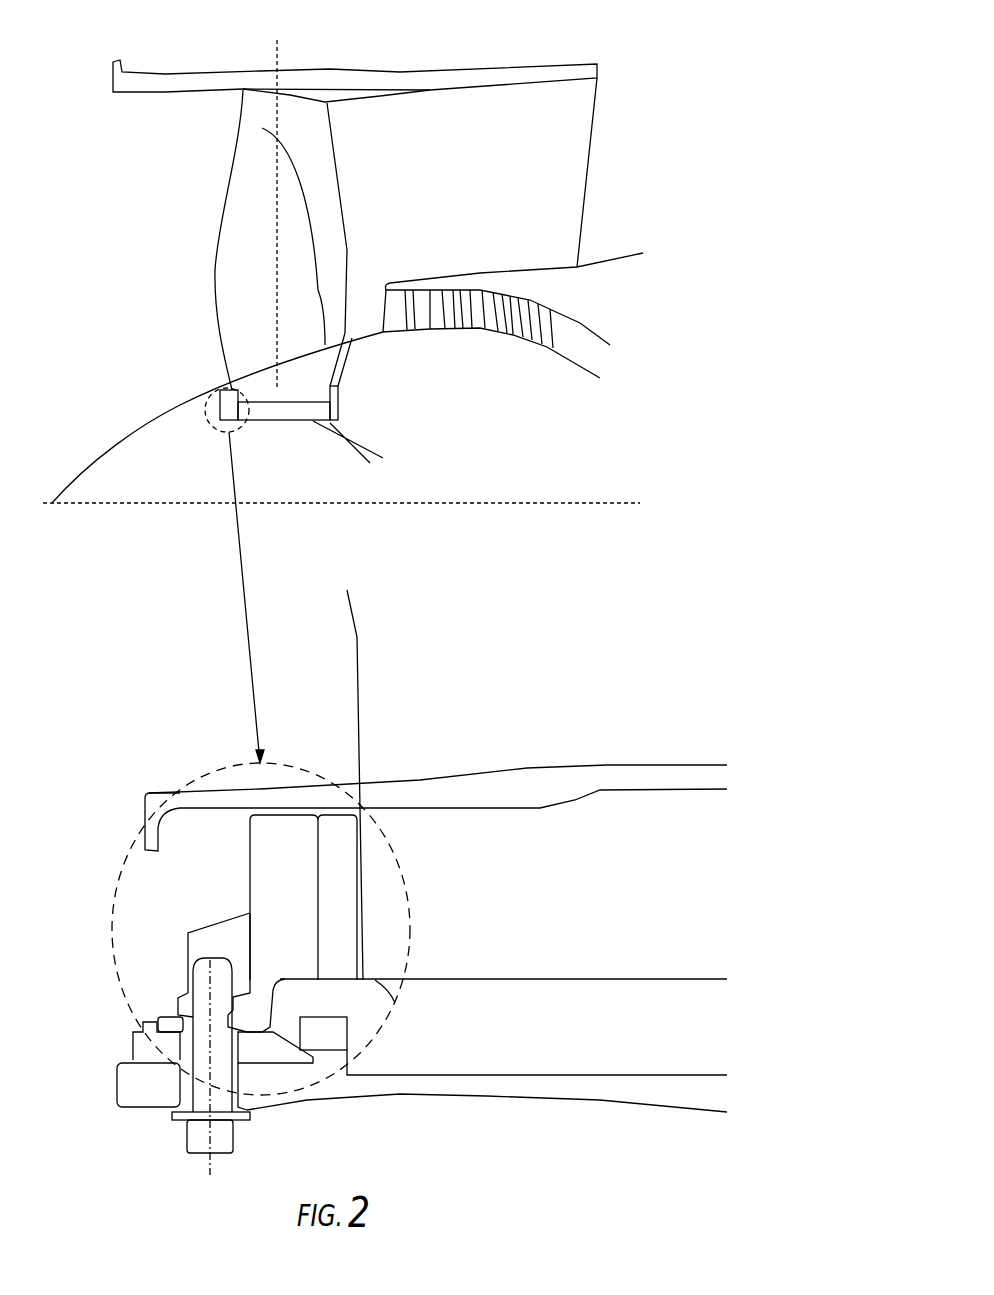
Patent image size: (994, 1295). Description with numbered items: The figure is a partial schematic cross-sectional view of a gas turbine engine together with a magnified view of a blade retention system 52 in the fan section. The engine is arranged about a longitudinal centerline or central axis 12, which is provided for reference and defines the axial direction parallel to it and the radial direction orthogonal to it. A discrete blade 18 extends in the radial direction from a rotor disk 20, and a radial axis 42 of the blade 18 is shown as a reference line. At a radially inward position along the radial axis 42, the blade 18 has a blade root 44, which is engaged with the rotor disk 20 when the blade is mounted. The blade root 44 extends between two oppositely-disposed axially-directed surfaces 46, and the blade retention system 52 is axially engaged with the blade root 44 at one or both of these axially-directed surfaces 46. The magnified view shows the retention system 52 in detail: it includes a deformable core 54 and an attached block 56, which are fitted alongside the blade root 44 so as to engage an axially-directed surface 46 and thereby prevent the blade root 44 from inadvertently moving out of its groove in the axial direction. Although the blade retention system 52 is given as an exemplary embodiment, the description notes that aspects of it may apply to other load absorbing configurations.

The central axis 12 is at (52, 503).
The blade 18 is at (217, 236).
The rotor disk 20 is at (315, 422).
The radial axis 42 is at (276, 202).
The blade root 44 is at (303, 377).
The axially-directed surface 46 is at (216, 392).
The blade retention system 52 is at (184, 419).
The deformable core 54 is at (330, 940).
The block 56 is at (271, 950).